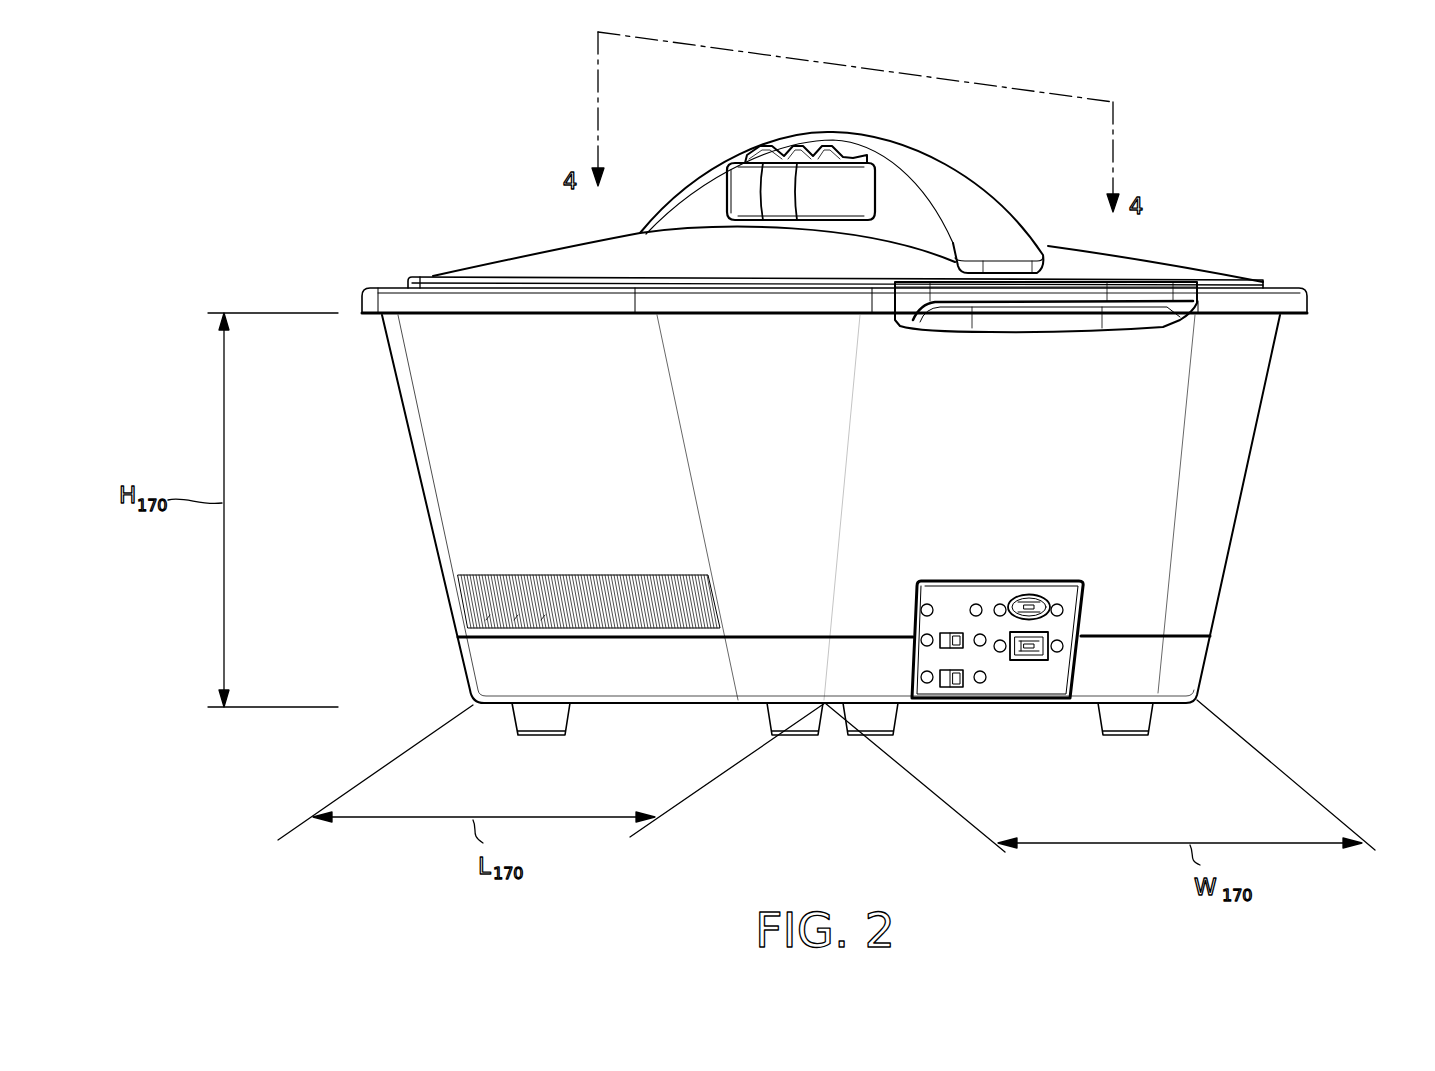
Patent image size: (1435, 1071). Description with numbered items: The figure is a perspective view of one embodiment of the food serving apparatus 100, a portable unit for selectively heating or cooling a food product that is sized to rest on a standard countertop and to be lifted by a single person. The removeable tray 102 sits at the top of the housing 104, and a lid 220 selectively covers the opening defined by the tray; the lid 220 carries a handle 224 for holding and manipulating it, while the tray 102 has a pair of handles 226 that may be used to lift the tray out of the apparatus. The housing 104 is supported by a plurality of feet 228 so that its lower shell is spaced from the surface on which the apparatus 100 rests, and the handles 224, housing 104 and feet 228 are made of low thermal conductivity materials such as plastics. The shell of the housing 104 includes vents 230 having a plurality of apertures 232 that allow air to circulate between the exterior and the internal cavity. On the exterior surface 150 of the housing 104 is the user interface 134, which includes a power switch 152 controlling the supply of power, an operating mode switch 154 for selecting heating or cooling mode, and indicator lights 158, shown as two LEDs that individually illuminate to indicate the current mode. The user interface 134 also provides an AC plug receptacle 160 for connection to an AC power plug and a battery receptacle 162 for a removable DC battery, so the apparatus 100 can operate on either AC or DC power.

The food serving apparatus 100 is at (1294, 521).
The removeable tray 102 is at (1275, 303).
The housing 104 is at (413, 385).
The user interface 134 is at (1010, 679).
The exterior surface 150 is at (427, 443).
The power switch 152 is at (952, 690).
The operating mode switch 154 is at (923, 685).
The indicator lights 158 is at (975, 612).
The AC plug receptacle 160 is at (1048, 620).
The battery receptacle 162 is at (1040, 661).
The lid 220 is at (523, 260).
The handles 224 is at (982, 217).
The handles 226 is at (1130, 298).
The feet 228 is at (535, 720).
The vents 230 is at (497, 588).
The apertures 232 is at (545, 618).